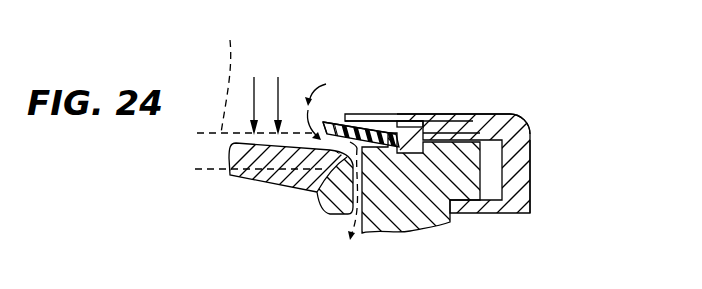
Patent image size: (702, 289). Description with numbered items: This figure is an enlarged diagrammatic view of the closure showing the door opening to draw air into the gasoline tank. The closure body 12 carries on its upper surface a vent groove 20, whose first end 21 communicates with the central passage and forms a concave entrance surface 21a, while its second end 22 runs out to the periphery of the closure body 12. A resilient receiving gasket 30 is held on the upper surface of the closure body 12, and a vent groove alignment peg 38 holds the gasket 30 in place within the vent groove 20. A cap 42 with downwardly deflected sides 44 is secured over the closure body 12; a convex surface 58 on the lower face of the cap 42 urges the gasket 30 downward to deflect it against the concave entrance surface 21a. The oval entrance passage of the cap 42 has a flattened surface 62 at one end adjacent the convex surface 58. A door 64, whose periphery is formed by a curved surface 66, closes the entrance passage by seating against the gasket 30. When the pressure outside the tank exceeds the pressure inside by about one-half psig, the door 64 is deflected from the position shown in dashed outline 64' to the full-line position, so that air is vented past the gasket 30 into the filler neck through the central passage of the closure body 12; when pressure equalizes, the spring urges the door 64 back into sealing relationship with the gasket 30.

The closure body 12 is at (430, 214).
The vent groove 20 is at (466, 130).
The first end of vent groove 21 is at (411, 120).
The concave entrance surface 21a is at (393, 121).
The second end of vent groove 22 is at (533, 136).
The resilient receiving gasket 30 is at (365, 135).
The vent groove alignment peg 38 is at (421, 119).
The cap 42 is at (493, 117).
The downwardly deflected sides 44 is at (525, 178).
The convex surface 58 is at (381, 135).
The flattened surface 62 is at (342, 114).
The door 64 is at (289, 180).
The dashed outline of door 64' is at (222, 75).
The curved surface 66 is at (316, 190).